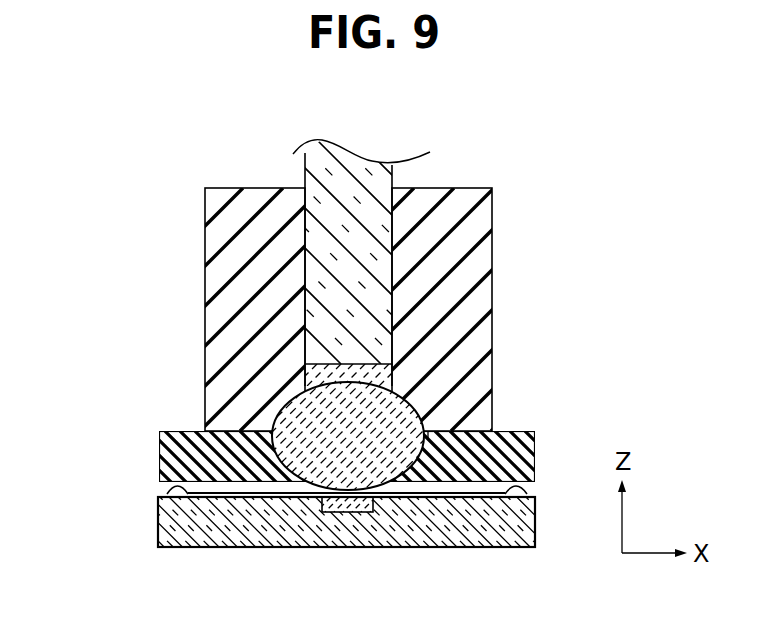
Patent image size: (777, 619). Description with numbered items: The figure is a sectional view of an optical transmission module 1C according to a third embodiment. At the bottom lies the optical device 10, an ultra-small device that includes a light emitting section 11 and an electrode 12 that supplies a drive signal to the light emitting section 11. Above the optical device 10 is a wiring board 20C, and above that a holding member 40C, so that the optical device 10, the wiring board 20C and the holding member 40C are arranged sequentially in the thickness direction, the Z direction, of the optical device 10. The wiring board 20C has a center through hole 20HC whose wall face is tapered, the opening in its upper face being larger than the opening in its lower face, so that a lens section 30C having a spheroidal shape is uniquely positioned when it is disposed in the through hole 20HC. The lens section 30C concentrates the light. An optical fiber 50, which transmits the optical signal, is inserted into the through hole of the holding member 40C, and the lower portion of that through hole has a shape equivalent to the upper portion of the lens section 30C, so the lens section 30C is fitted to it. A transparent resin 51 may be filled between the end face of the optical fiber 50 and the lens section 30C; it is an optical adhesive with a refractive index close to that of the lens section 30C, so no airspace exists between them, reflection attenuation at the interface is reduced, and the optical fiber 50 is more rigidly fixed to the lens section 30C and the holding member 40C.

The optical transmission module 1C is at (620, 255).
The optical device 10 is at (158, 528).
The light emitting section 11 is at (342, 513).
The electrode 12 is at (167, 491).
The wiring board 20C is at (183, 431).
The through hole 20HC is at (432, 424).
The lens section 30C is at (293, 393).
The holding member 40C is at (205, 240).
The optical fiber 50 is at (305, 172).
The transparent resin 51 is at (395, 380).